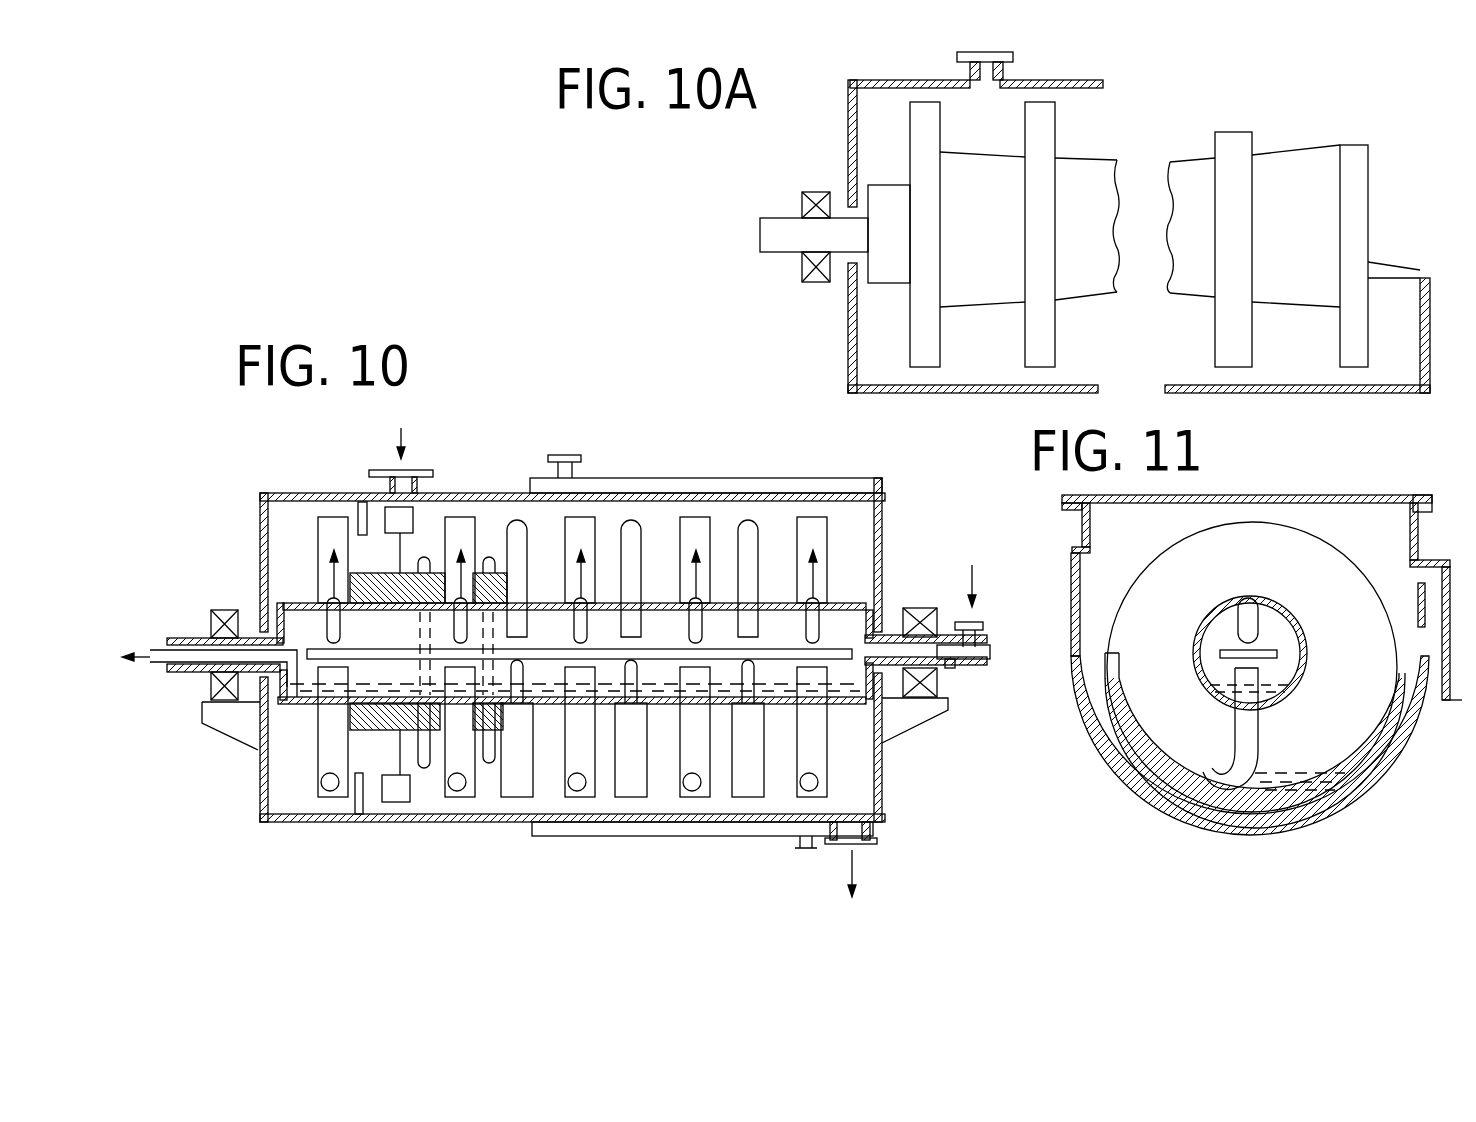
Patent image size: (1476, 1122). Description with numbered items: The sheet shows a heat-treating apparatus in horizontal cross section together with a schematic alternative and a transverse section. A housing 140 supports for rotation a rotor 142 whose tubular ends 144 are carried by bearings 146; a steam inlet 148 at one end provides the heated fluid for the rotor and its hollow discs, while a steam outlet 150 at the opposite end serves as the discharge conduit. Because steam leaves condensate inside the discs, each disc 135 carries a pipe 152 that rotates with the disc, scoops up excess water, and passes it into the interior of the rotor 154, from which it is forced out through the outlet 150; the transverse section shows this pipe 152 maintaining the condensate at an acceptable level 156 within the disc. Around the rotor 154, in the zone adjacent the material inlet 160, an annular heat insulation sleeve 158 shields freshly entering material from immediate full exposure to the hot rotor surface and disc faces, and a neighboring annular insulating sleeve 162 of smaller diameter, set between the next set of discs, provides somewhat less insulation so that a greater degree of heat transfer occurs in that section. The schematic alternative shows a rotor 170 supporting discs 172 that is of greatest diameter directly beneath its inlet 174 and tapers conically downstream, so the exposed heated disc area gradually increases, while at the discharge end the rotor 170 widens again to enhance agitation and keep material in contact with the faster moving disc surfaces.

In FIG. 10, the disc 135 is at (635, 797).
In FIG. 10, the housing 140 is at (353, 823).
In FIG. 10, the rotor 142 is at (297, 603).
In FIG. 10, the tubular ends 144 is at (200, 637).
In FIG. 10, the bearings 146 is at (210, 678).
In FIG. 10, the steam inlet 148 is at (965, 622).
In FIG. 10, the steam outlet 150 is at (153, 662).
In FIG. 11, the pipe 152 is at (1127, 707).
In FIG. 10, the rotor 154 is at (663, 603).
In FIG. 11, the condensate level 156 is at (1297, 773).
In FIG. 10, the annular heat insulation sleeve 158 is at (370, 585).
In FIG. 10, the inlet 160 is at (387, 492).
In FIG. 10, the annular insulating sleeve 162 is at (492, 598).
In FIG. 10A, the rotor 170 is at (975, 307).
In FIG. 10A, the discs 172 is at (922, 122).
In FIG. 10A, the inlet 174 is at (1007, 73).